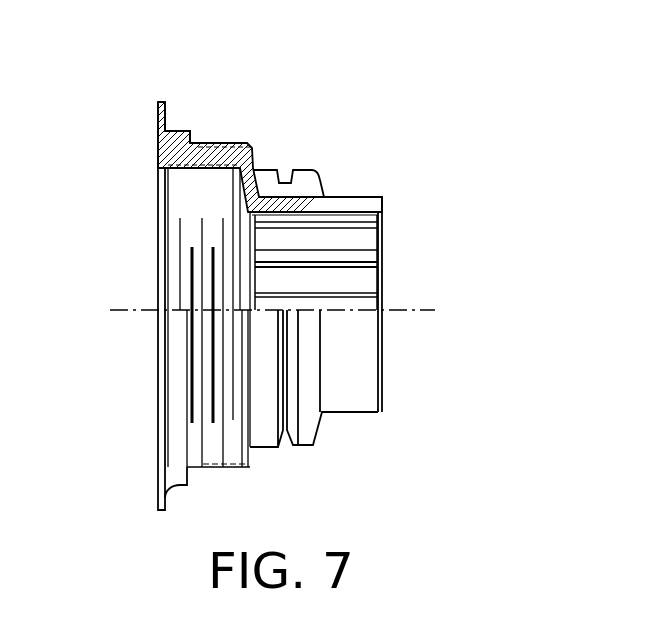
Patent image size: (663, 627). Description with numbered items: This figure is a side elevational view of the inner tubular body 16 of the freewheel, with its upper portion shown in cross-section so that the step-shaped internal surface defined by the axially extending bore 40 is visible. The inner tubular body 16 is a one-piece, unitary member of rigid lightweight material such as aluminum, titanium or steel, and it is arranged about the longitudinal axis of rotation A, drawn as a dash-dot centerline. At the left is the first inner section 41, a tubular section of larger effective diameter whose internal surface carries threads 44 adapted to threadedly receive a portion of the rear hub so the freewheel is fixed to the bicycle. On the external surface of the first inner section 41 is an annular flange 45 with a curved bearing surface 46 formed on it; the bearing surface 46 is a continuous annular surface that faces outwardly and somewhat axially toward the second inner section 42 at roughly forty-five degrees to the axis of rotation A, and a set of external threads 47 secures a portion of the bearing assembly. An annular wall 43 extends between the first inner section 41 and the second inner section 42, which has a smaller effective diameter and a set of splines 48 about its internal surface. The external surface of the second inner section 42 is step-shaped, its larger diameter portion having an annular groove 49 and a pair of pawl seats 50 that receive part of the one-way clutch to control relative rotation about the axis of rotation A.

The inner tubular body 16 is at (350, 116).
The axially extending bore 40 is at (360, 270).
The first inner section 41 is at (227, 141).
The second inner section 42 is at (365, 190).
The annular wall 43 is at (237, 198).
The threads 44 is at (193, 170).
The annular flange 45 is at (158, 130).
The curved bearing surface 46 is at (170, 129).
The external threads 47 is at (202, 146).
The splines 48 is at (365, 238).
The annular groove 49 is at (285, 168).
The pawl seats 50 is at (320, 182).
The axis of rotation A is at (420, 308).